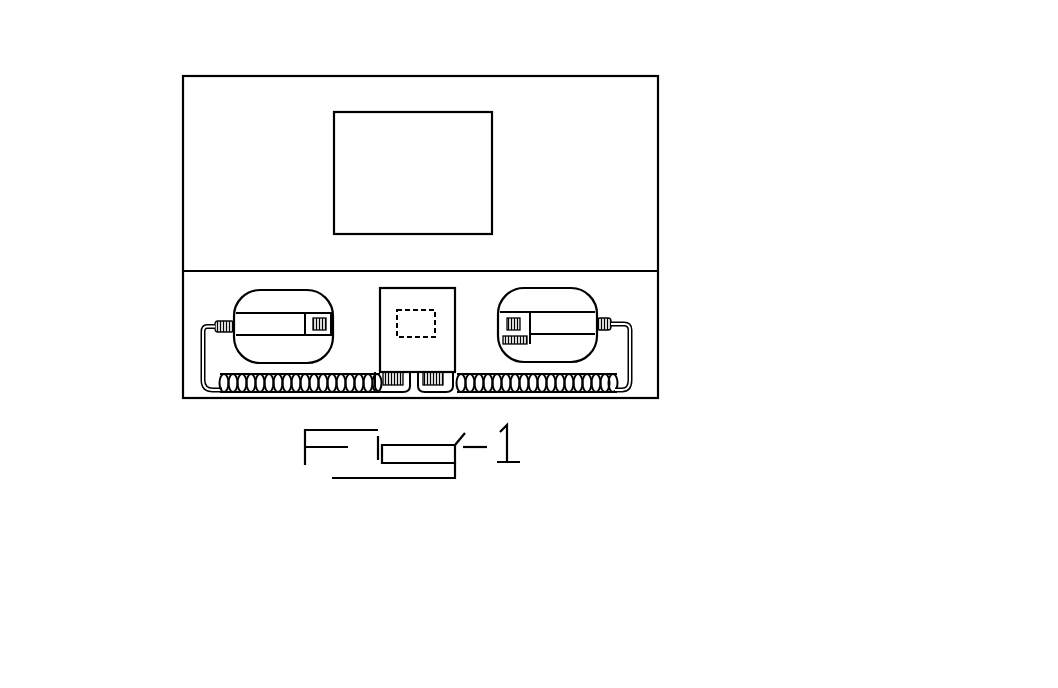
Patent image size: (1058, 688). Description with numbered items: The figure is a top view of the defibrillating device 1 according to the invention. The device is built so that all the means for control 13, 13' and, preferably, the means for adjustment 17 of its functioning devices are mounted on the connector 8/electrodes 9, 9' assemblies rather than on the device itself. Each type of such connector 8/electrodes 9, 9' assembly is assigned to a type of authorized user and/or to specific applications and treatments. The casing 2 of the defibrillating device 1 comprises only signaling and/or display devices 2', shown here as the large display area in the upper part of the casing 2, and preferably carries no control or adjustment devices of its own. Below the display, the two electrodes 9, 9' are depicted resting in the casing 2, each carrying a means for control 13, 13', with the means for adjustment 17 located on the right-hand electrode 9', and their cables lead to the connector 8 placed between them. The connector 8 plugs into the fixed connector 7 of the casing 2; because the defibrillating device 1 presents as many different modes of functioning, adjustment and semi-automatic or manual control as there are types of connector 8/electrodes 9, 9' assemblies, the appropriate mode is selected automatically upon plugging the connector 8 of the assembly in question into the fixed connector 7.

The defibrillating device 1 is at (705, 73).
The casing 2 is at (510, 186).
The signaling and/or display devices 2' is at (269, 136).
The fixed connector 7 is at (413, 322).
The connector 8 is at (432, 360).
The electrode 9 is at (186, 314).
The electrode 9' is at (669, 278).
The means for control 13 is at (178, 357).
The means for control 13' is at (685, 352).
The means for adjustment 17 is at (528, 340).